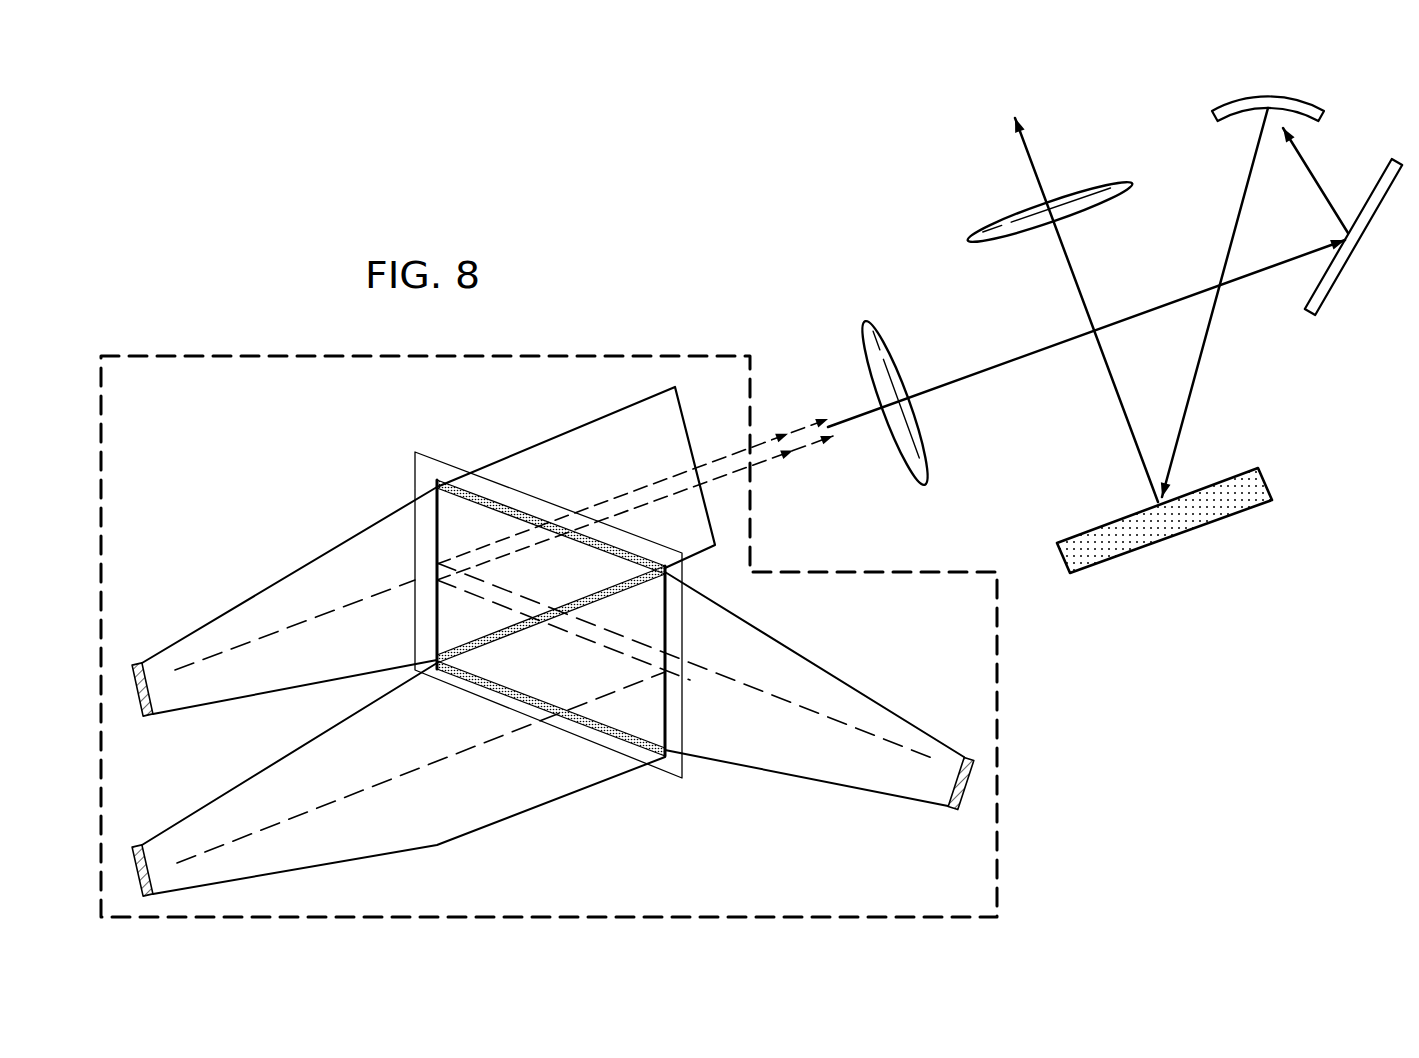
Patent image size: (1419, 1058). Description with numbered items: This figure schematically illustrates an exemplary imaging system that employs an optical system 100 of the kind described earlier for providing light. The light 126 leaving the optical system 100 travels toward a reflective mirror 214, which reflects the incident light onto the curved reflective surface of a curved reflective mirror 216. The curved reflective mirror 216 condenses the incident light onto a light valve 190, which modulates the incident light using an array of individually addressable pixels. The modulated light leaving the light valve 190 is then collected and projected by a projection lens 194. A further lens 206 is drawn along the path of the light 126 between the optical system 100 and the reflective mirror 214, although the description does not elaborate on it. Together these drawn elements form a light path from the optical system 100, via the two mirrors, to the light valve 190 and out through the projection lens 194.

The optical system 100 is at (285, 468).
The light 126 is at (812, 462).
The lens 206 is at (860, 322).
The projection lens 194 is at (1087, 183).
The curved reflective mirror 216 is at (1290, 98).
The reflective mirror 214 is at (1353, 253).
The light valve 190 is at (1210, 525).